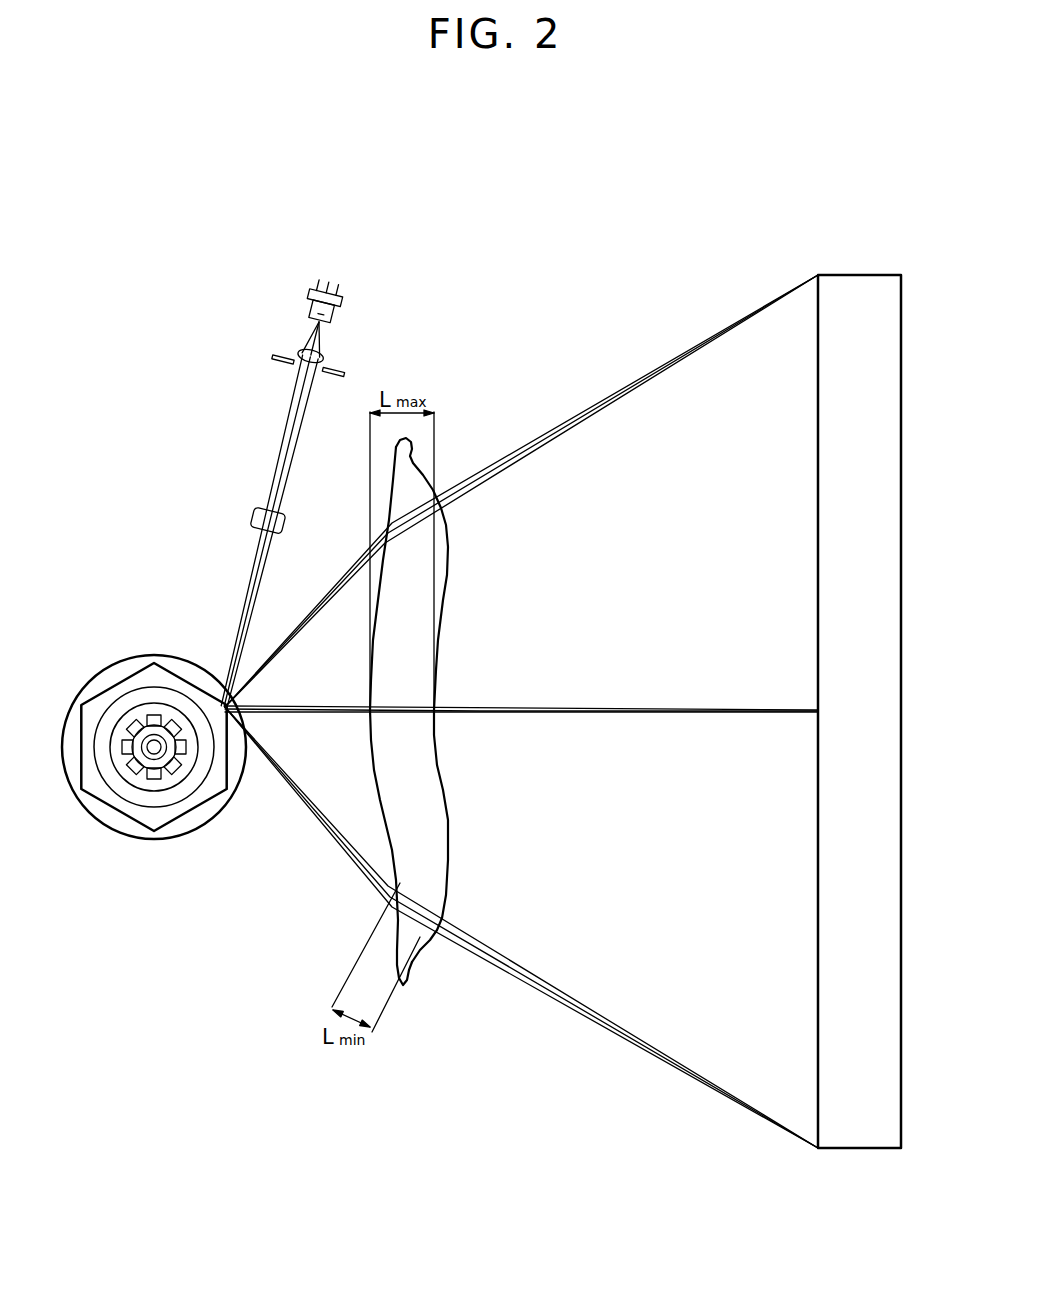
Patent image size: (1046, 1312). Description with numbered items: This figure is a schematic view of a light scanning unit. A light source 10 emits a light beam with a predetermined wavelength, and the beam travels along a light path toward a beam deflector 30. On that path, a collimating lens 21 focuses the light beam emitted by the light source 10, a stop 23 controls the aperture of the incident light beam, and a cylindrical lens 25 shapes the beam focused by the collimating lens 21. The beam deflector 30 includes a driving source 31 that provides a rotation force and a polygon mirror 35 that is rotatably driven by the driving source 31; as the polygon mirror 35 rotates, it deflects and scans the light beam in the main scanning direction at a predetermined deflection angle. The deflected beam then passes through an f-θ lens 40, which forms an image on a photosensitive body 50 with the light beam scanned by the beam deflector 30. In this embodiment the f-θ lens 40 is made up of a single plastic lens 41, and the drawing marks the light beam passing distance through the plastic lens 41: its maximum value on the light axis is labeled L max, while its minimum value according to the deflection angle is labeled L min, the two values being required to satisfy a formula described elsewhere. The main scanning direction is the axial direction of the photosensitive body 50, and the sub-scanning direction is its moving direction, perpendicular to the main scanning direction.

The light source 10 is at (298, 290).
The collimating lens 21 is at (302, 352).
The stop 23 is at (280, 359).
The cylindrical lens 25 is at (252, 513).
The beam deflector 30 is at (157, 785).
The driving source 31 is at (167, 838).
The polygon mirror 35 is at (212, 799).
The f-θ lens 40 is at (419, 711).
The plastic lens 41 is at (448, 842).
The photosensitive body 50 is at (865, 1142).